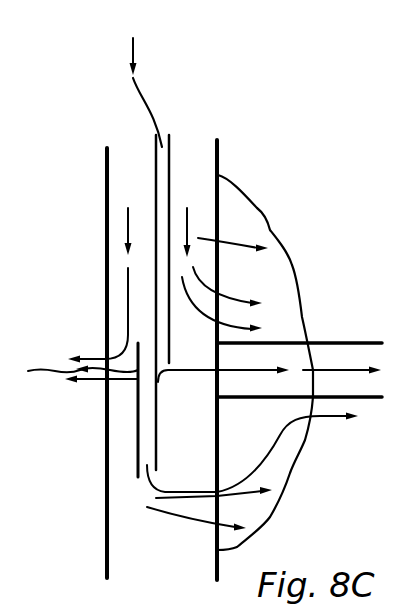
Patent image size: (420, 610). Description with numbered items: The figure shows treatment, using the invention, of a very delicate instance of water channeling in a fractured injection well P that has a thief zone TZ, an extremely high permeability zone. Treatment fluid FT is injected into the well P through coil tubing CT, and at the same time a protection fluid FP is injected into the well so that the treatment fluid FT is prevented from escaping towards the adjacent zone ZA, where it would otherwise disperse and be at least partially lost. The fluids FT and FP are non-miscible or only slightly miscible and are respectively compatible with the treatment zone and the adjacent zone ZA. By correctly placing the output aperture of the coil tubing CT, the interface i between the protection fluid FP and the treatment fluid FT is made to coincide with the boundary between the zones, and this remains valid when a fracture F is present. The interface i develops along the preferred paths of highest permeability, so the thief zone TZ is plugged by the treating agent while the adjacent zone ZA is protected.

The treatment fluid FT is at (201, 209).
The coil tubing CT is at (180, 290).
The well P is at (207, 360).
The fracture F is at (265, 362).
The protection fluid FP is at (202, 354).
The interface i is at (77, 367).
The adjacent zone ZA is at (309, 374).
The thief zone TZ is at (316, 370).